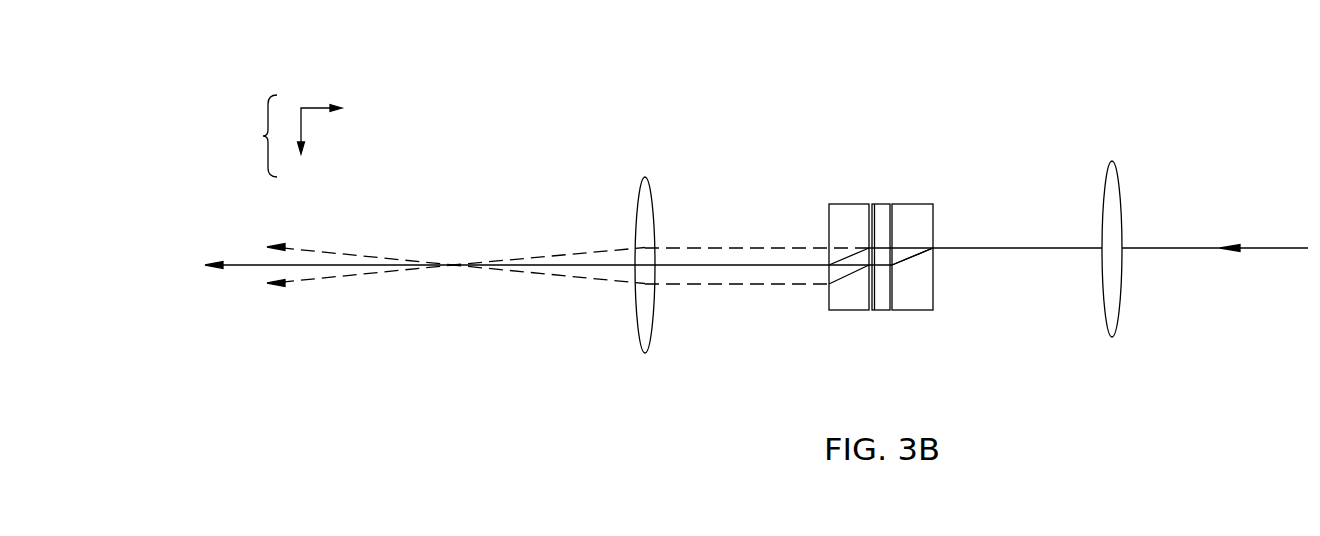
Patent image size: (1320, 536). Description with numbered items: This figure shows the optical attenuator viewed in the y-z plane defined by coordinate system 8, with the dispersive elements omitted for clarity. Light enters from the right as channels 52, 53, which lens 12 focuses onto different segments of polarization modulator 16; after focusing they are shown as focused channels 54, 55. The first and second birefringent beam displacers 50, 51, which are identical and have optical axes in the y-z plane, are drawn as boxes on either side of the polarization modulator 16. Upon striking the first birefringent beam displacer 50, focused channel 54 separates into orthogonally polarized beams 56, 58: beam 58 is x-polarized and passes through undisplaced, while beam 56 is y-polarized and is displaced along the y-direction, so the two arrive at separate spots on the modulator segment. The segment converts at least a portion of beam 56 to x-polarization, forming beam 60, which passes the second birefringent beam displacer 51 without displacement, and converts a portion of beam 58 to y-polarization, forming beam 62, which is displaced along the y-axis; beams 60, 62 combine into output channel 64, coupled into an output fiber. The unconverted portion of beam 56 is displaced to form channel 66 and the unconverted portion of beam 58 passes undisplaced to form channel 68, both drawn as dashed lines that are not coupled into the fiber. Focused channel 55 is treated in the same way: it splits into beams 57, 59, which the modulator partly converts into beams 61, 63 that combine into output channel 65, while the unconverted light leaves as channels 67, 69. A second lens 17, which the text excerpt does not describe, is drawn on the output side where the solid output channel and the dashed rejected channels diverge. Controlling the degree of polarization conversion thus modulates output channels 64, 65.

The coordinate system 8 is at (298, 139).
The lens 12 is at (1112, 235).
The polarization modulator 16 is at (880, 242).
The lens 17 is at (653, 259).
The first birefringent beam displacer 50 is at (912, 242).
The second birefringent beam displacer 51 is at (849, 242).
The channel 52 is at (1215, 235).
The channel 53 is at (1215, 235).
The focused channel 54 is at (985, 233).
The focused channel 55 is at (985, 233).
The beam 56 is at (935, 314).
The beam 57 is at (913, 263).
The beam 58 is at (955, 199).
The beam 59 is at (913, 252).
The beam 60 is at (847, 323).
The beam 61 is at (848, 270).
The beam 62 is at (812, 206).
The beam 63 is at (835, 262).
The output channel 64 is at (528, 249).
The output channel 65 is at (528, 249).
The channel 66 is at (548, 252).
The channel 67 is at (548, 252).
The channel 68 is at (568, 281).
The channel 69 is at (568, 281).